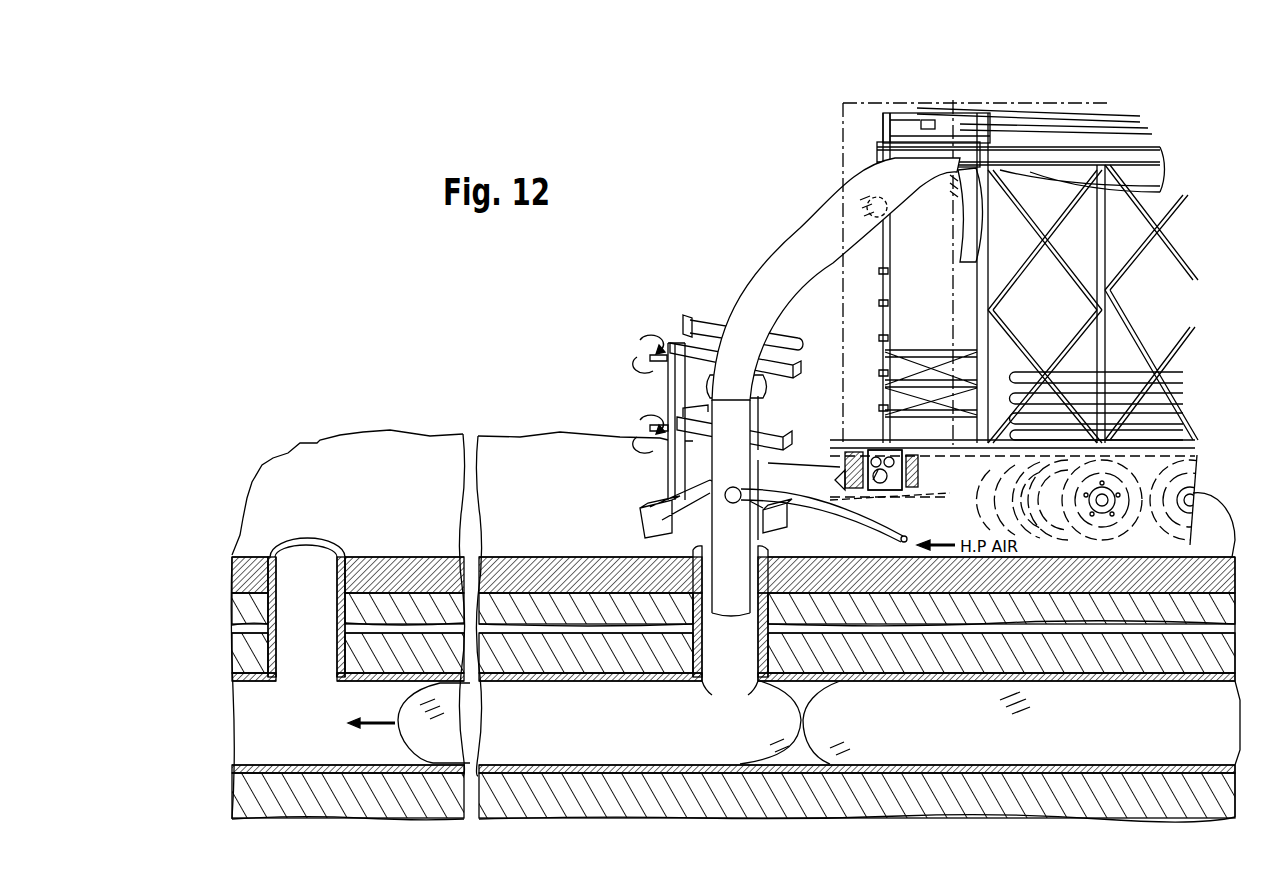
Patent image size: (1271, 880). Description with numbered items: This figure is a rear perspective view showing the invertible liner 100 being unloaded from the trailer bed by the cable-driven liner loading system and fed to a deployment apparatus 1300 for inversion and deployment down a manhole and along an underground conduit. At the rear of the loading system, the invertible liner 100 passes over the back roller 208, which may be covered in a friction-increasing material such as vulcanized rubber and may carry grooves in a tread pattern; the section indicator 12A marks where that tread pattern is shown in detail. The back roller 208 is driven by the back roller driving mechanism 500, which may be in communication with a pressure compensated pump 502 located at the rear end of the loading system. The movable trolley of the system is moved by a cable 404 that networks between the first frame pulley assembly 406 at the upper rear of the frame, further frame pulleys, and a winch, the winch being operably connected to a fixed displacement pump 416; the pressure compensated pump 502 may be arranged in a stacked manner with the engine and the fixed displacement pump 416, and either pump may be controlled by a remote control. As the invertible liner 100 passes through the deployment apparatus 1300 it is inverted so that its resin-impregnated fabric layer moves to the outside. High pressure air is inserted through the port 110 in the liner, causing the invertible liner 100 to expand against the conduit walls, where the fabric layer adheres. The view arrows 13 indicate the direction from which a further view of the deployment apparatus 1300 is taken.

The invertible liner 100 is at (793, 247).
The port 110 is at (748, 485).
The back roller 208 is at (915, 195).
The section line 12A is at (948, 205).
The section view 13 indicator 13 is at (707, 410).
The cable 404 is at (1017, 105).
The first frame pulley assembly 406 is at (927, 126).
The fixed displacement pump 416 is at (873, 480).
The back roller driving mechanism 500 is at (868, 203).
The pressure compensated pump 502 is at (895, 488).
The deployment apparatus 1300 is at (712, 316).